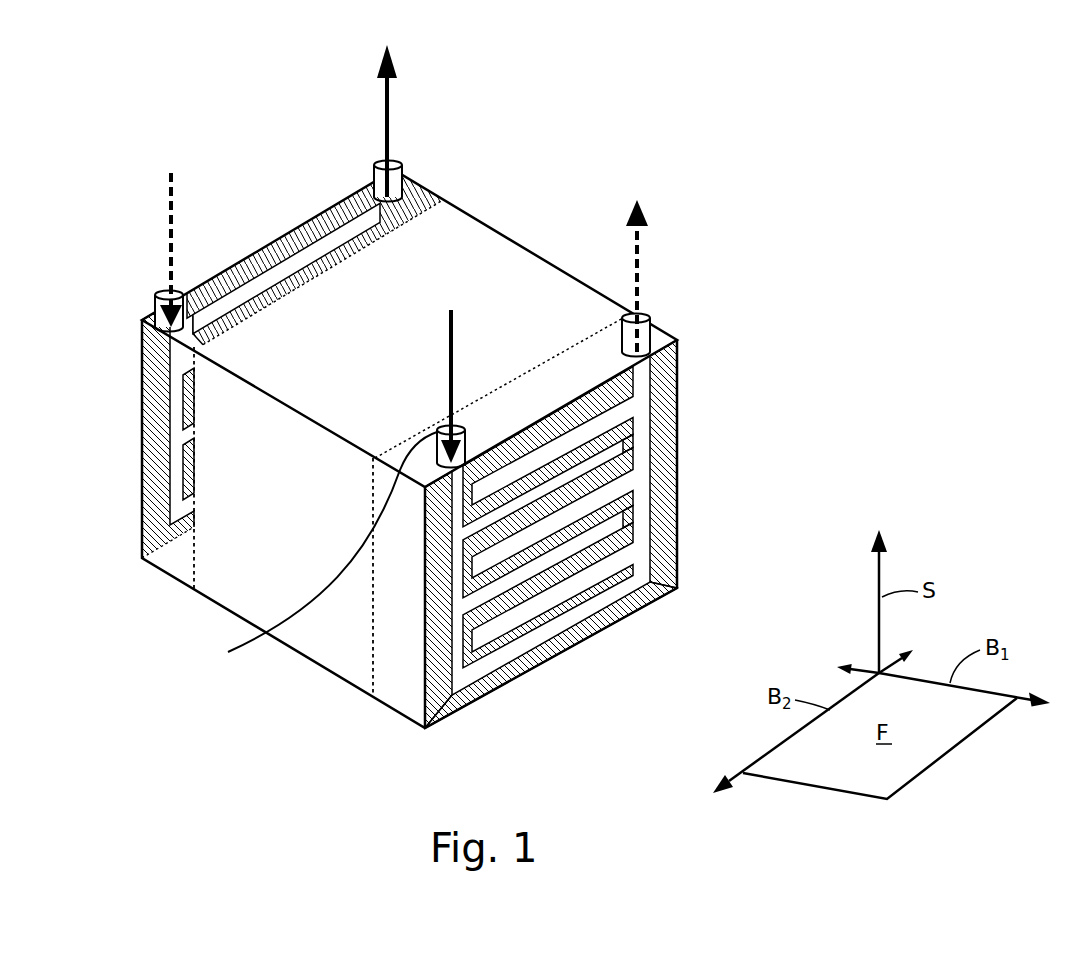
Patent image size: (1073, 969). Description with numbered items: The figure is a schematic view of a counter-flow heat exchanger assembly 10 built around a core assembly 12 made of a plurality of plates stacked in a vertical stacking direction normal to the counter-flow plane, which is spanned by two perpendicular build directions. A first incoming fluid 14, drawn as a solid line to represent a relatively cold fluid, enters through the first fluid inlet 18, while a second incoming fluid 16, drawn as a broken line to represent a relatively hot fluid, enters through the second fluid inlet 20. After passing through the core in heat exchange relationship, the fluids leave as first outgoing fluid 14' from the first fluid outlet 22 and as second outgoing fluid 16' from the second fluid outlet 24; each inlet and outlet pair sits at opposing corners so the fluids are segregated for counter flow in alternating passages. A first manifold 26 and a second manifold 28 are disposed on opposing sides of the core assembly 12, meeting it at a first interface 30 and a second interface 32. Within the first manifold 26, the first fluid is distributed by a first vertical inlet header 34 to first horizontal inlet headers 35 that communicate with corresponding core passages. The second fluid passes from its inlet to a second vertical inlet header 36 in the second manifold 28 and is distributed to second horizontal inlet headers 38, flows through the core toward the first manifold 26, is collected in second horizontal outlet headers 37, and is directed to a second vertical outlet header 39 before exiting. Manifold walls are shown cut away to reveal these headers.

The counter-flow heat exchanger assembly 10 is at (760, 203).
The core assembly 12 is at (583, 272).
The first incoming fluid 14 is at (413, 389).
The first outgoing fluid 14' is at (421, 121).
The second incoming fluid 16 is at (133, 250).
The second outgoing fluid 16' is at (671, 276).
The first fluid inlet 18 is at (315, 551).
The second fluid inlet 20 is at (152, 307).
The first fluid outlet 22 is at (402, 175).
The second fluid outlet 24 is at (652, 324).
The first manifold 26 is at (580, 655).
The second manifold 28 is at (290, 210).
The first interface 30 is at (372, 674).
The second interface 32 is at (422, 213).
The first vertical inlet header 34 is at (460, 585).
The first horizontal inlet headers 35 is at (607, 458).
The second vertical inlet header 36 is at (178, 420).
The second horizontal outlet headers 37 is at (504, 618).
The second horizontal inlet headers 38 is at (185, 368).
The second vertical outlet header 39 is at (640, 425).